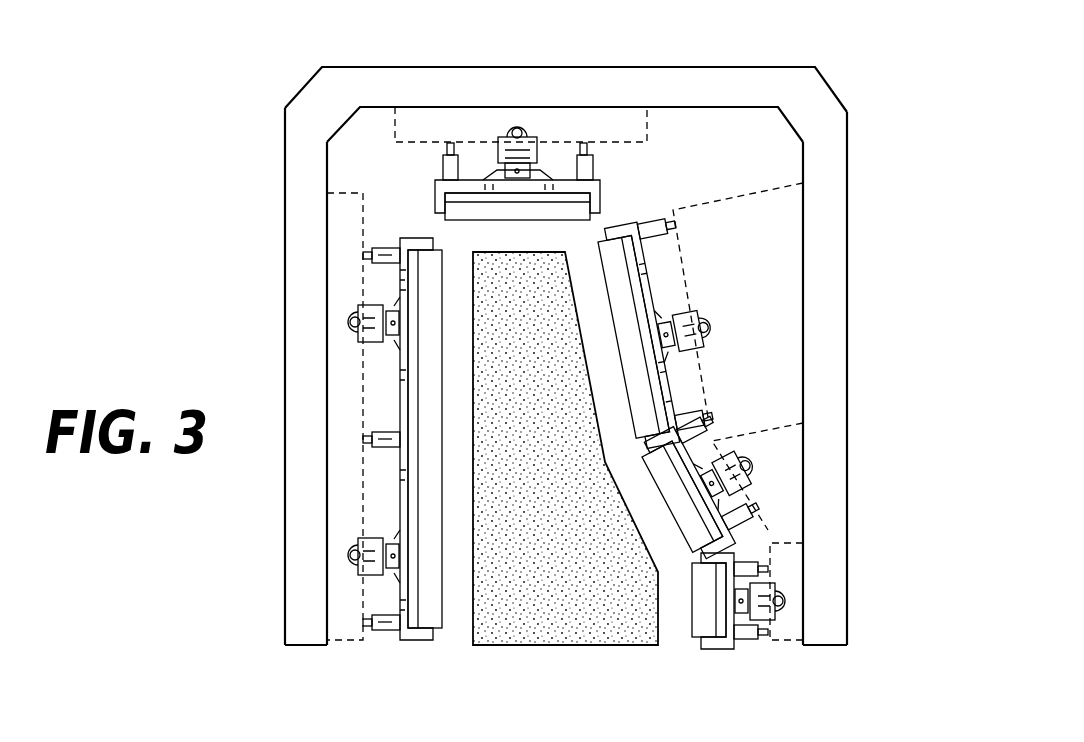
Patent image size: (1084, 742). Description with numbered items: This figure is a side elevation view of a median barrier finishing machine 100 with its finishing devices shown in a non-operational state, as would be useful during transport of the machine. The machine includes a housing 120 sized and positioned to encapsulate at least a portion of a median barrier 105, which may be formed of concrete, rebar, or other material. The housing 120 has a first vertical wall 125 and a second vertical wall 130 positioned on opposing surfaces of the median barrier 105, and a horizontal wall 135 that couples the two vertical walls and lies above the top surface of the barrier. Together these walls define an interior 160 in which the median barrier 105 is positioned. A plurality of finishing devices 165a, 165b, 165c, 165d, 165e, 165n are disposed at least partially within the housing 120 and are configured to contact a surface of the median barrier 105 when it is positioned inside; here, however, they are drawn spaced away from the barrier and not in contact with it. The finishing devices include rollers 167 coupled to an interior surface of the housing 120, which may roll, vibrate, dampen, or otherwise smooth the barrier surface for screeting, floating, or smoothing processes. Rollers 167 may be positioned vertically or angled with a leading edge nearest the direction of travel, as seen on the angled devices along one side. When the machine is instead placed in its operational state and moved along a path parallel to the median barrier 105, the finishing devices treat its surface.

The median barrier finishing machine 100 is at (895, 607).
The median barrier 105 is at (562, 508).
The housing 120 is at (845, 177).
The first vertical wall 125 is at (285, 312).
The second vertical wall 130 is at (850, 315).
The horizontal wall 135 is at (692, 67).
The interior 160 is at (765, 163).
The finishing device 165a is at (400, 398).
The finishing device 165b is at (400, 512).
The finishing device 165c is at (603, 202).
The finishing device 165d is at (652, 297).
The finishing device 165e is at (742, 506).
The finishing device 165n is at (735, 555).
The roller 167 is at (438, 586).